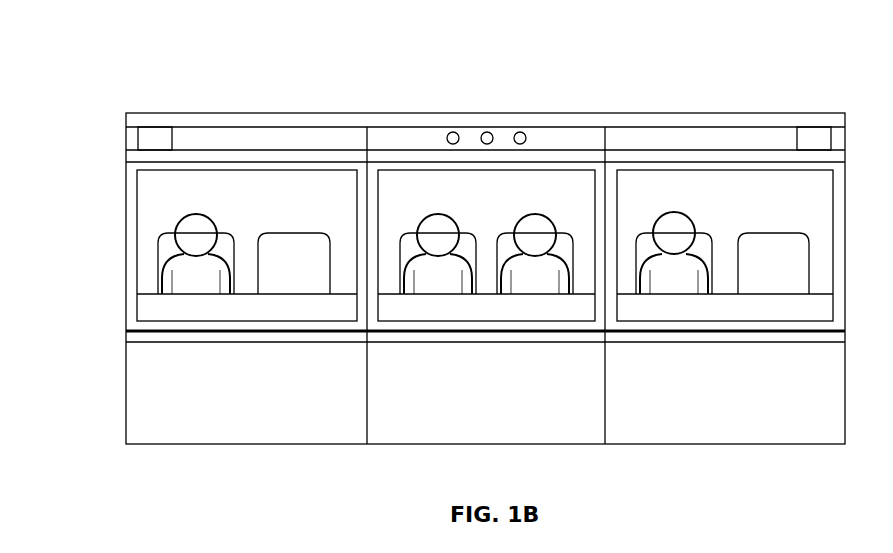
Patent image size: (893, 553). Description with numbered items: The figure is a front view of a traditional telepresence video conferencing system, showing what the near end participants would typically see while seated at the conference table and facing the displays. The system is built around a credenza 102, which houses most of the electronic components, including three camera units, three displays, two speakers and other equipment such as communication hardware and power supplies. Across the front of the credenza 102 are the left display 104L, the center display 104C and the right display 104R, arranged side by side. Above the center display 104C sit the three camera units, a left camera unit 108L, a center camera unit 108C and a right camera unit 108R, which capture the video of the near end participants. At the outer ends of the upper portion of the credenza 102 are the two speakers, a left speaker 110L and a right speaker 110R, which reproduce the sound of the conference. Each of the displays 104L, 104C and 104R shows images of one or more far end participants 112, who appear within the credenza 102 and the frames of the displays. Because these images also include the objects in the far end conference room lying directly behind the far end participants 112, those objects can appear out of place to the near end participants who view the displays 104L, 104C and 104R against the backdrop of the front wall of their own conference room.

The credenza 102 is at (273, 113).
The left display 104L is at (320, 335).
The center display 104C is at (478, 332).
The right display 104R is at (668, 332).
The left camera unit 108L is at (452, 131).
The center camera unit 108C is at (487, 131).
The right camera unit 108R is at (520, 131).
The left speaker 110L is at (156, 127).
The right speaker 110R is at (815, 127).
The far end participants 112 is at (175, 222).